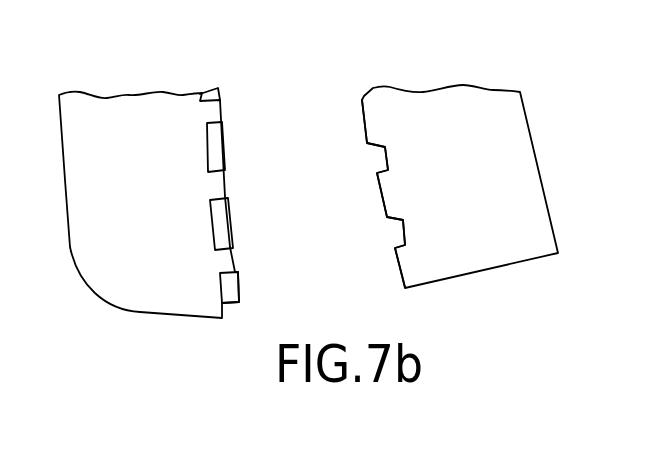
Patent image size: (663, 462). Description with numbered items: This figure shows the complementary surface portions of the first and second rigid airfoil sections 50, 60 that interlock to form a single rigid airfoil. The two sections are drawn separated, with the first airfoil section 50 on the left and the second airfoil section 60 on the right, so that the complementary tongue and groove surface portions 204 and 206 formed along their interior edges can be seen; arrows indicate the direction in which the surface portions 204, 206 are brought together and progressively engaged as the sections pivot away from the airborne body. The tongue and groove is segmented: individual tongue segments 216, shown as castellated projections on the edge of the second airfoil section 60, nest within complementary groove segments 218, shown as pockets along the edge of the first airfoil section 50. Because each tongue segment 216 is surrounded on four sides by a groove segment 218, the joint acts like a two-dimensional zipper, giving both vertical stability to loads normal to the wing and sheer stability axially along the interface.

The first rigid airfoil section 50 is at (68, 106).
The second rigid airfoil section 60 is at (512, 102).
The tongue segments 216 is at (373, 125).
The groove segments 218 is at (213, 138).
The tongue and groove surface portion 204 is at (430, 312).
The tongue and groove surface portion 206 is at (230, 337).